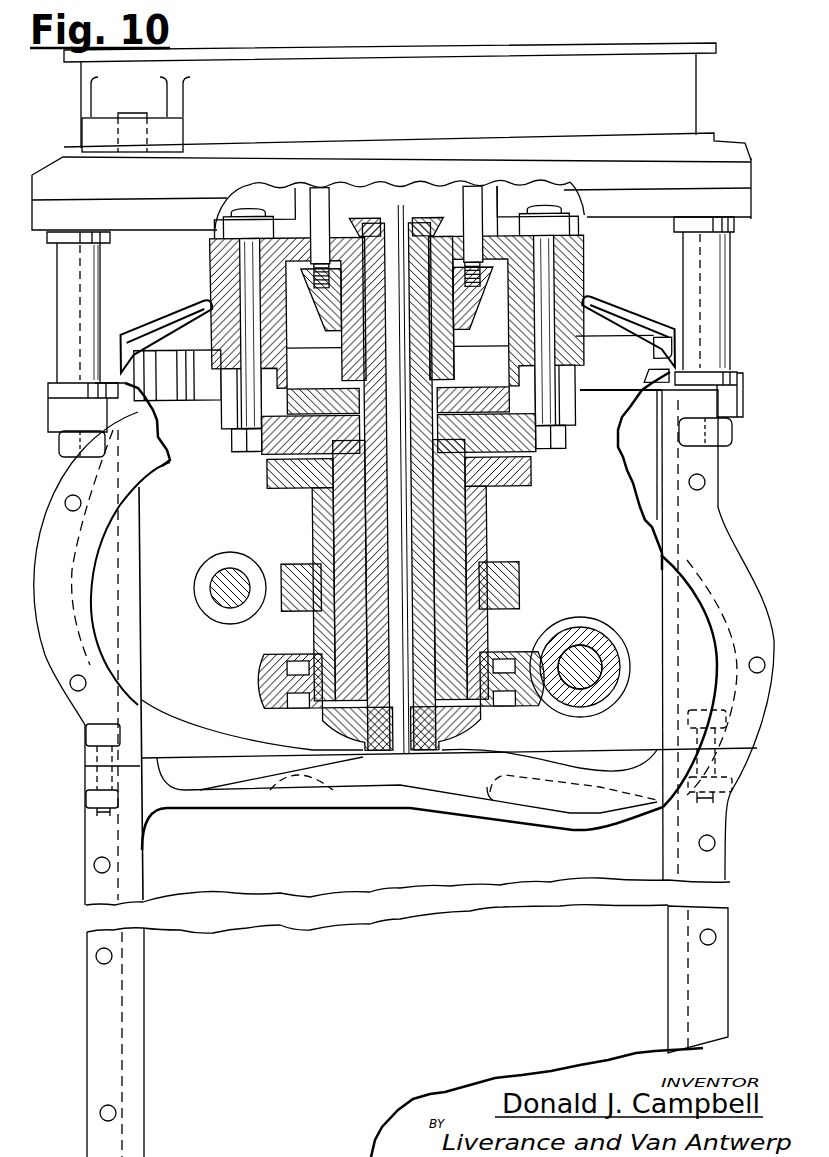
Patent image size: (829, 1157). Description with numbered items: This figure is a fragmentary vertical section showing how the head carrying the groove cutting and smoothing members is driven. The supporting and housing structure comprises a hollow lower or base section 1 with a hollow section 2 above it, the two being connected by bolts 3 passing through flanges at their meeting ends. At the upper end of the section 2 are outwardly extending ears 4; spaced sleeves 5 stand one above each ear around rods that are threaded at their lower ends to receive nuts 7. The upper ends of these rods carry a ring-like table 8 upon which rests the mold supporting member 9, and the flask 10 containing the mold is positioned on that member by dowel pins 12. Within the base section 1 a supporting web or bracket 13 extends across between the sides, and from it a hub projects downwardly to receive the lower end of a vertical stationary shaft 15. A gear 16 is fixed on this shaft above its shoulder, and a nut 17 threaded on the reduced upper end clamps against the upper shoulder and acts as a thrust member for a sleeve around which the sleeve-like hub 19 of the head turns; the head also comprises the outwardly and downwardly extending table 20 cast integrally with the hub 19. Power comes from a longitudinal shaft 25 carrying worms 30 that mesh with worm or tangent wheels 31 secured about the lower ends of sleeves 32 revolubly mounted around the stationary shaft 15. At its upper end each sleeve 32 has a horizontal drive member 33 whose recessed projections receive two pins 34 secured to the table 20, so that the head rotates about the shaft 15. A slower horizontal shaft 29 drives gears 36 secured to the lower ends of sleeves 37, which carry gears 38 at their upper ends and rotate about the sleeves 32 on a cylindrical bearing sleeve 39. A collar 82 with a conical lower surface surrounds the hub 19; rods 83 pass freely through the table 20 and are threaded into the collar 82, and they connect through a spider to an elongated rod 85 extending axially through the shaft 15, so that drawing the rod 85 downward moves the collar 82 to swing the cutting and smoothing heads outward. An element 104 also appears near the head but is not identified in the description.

The lower or base section 1 is at (700, 980).
The section 2 is at (720, 582).
The bolts 3 is at (93, 820).
The ears 4 is at (55, 410).
The sleeves 5 is at (68, 287).
The nuts 7 is at (63, 443).
The ring-like table 8 is at (744, 205).
The mold supporting member 9 is at (722, 160).
The flask 10 is at (688, 100).
The dowel pins 12 is at (143, 98).
The supporting web or bracket 13 is at (243, 787).
The vertical stationary shaft 15 is at (430, 533).
The gear 16 is at (300, 403).
The nut 17 is at (430, 222).
The sleeve-like hub 19 is at (445, 352).
The table 20 is at (605, 290).
The longitudinal shaft 25 is at (585, 650).
The horizontal shaft 29 is at (220, 597).
The worms 30 is at (620, 690).
The worm or tangent wheels 31 is at (520, 703).
The sleeves 32 is at (453, 553).
The horizontal drive member 33 is at (262, 452).
The pins 34 is at (247, 362).
The gears 36 is at (297, 603).
The sleeves 37 is at (317, 512).
The gears 38 is at (507, 484).
The cylindrical bearing sleeve 39 is at (487, 583).
The collar 82 is at (463, 300).
The rods 83 is at (333, 197).
The elongated rod 85 is at (410, 745).
The gasket 104 is at (494, 203).